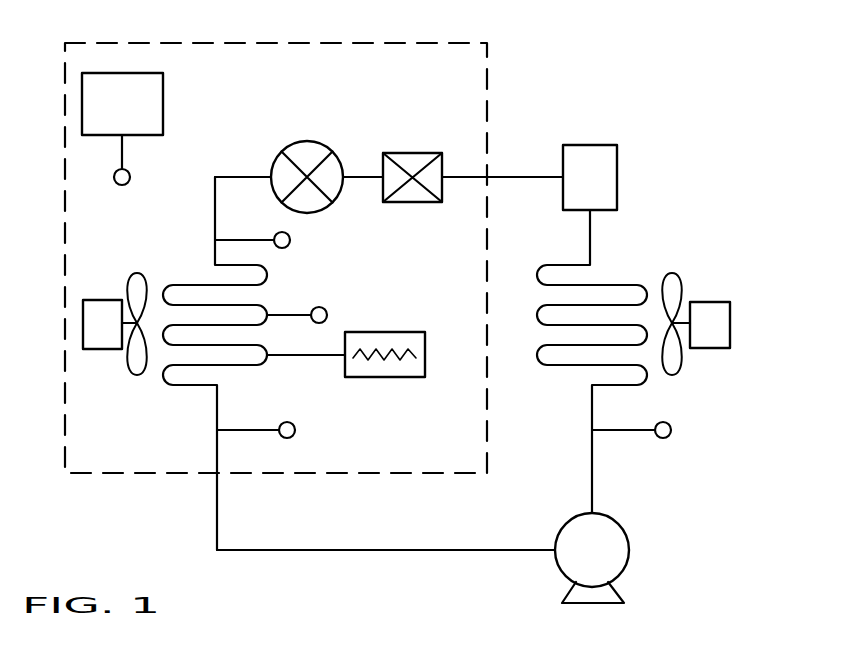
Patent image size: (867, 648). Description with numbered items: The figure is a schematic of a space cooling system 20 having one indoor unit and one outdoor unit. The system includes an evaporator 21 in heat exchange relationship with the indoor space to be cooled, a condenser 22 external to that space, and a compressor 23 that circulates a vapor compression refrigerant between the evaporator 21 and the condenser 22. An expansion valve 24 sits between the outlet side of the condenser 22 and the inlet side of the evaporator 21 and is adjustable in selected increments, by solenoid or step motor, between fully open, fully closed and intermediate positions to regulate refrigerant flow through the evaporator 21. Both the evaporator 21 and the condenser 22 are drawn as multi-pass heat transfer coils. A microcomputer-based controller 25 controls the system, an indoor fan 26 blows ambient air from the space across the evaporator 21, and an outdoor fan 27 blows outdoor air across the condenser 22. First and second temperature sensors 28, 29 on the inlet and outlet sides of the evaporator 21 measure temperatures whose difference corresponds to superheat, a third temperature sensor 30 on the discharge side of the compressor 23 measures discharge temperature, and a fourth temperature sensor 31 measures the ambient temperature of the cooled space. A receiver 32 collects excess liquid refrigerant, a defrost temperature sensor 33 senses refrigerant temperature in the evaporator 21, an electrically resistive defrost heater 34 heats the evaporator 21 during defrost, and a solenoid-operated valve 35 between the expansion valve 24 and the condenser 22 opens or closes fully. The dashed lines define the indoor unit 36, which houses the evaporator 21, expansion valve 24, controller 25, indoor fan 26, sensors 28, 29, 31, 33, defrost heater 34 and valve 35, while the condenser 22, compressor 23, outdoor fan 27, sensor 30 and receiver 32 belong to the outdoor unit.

The space cooling system 20 is at (698, 85).
The evaporator 21 is at (173, 385).
The condenser 22 is at (634, 283).
The compressor 23 is at (629, 551).
The expansion valve 24 is at (318, 142).
The controller 25 is at (163, 99).
The indoor fan 26 is at (112, 349).
The outdoor fan 27 is at (713, 302).
The first temperature sensor 28 is at (290, 241).
The second temperature sensor 29 is at (295, 431).
The third temperature sensor 30 is at (663, 438).
The fourth temperature sensor 31 is at (122, 186).
The receiver 32 is at (600, 145).
The defrost temperature sensor 33 is at (327, 316).
The defrost heater 34 is at (405, 377).
The solenoid-operated valve 35 is at (412, 153).
The indoor unit 36 is at (278, 43).